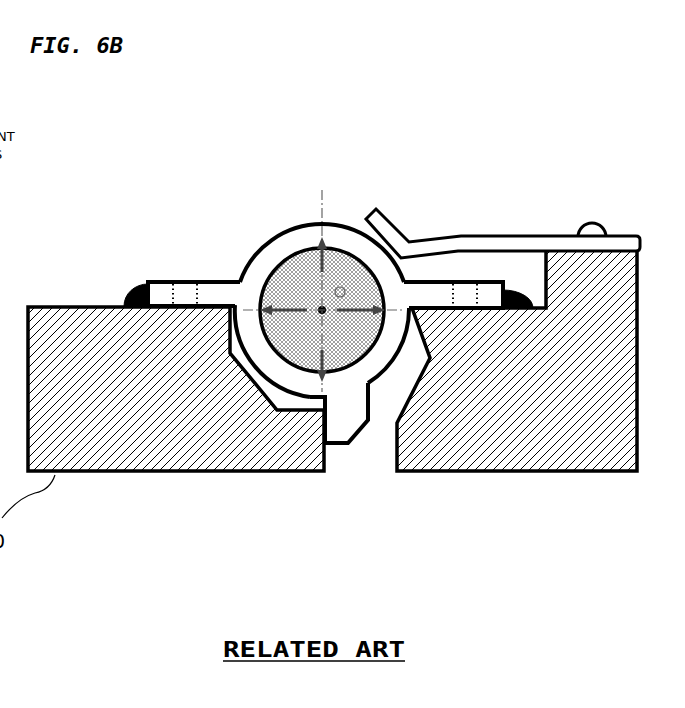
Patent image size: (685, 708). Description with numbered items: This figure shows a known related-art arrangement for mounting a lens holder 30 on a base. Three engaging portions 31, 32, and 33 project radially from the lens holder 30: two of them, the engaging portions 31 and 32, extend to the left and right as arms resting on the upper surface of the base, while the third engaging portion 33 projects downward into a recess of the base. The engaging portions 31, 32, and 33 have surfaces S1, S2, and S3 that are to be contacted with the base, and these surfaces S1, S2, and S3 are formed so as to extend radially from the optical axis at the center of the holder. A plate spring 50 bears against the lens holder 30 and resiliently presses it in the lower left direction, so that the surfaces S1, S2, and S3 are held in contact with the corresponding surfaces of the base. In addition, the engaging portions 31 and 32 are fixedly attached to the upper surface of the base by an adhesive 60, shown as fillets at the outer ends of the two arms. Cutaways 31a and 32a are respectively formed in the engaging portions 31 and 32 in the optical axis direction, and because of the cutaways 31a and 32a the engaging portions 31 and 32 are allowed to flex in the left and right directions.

The lens holder 30 is at (300, 220).
The engaging portion 31 is at (218, 283).
The cutaway 31a is at (182, 285).
The engaging portion 32 is at (423, 282).
The cutaway 32a is at (467, 283).
The engaging portion 33 is at (345, 444).
The plate spring 50 is at (381, 212).
The adhesive 60 is at (125, 292).
The surface S1 is at (203, 323).
The surface S2 is at (444, 323).
The surface S3 is at (333, 457).